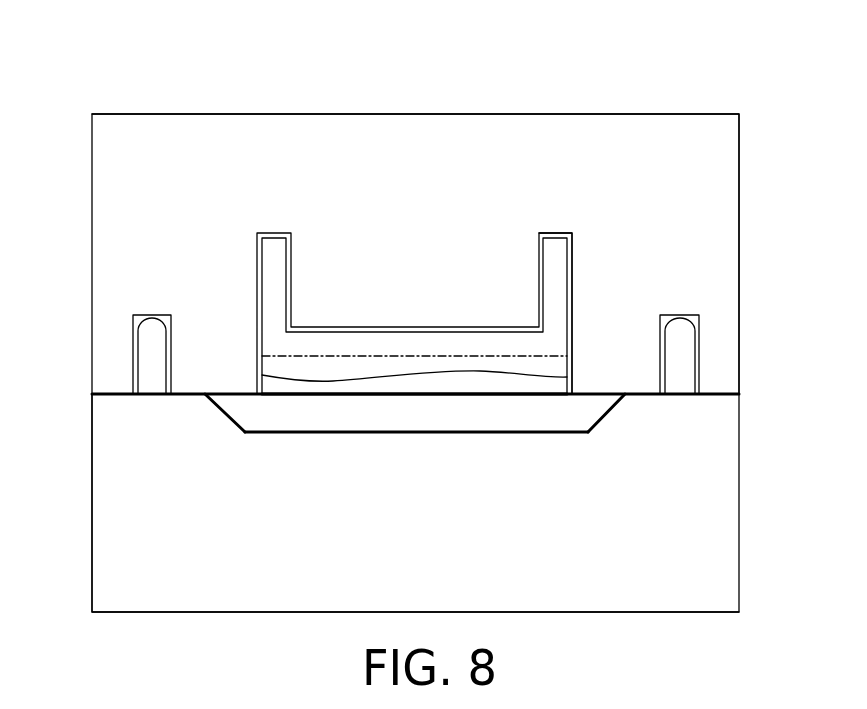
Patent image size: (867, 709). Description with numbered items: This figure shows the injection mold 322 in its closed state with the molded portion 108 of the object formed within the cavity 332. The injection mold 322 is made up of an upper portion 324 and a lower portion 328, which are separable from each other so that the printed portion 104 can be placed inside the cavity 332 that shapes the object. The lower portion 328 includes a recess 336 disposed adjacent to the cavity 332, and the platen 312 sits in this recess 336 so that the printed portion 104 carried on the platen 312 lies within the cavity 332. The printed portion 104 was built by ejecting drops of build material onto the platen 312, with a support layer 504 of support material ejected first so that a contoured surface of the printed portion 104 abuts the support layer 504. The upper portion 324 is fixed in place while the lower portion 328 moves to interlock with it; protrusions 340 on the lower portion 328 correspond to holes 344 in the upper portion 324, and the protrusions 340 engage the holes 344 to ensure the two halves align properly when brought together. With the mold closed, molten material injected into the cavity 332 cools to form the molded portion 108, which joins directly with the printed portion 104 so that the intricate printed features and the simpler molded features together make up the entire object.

The injection mold 322 is at (160, 82).
The upper portion 324 is at (477, 113).
The lower portion 328 is at (104, 534).
The platen 312 is at (582, 418).
The recess 336 is at (414, 433).
The protrusions 340 is at (133, 353).
The holes 344 is at (152, 315).
The cavity 332 is at (250, 337).
The molded portion 108 is at (560, 280).
The printed portion 104 is at (560, 367).
The support layer 504 is at (560, 388).